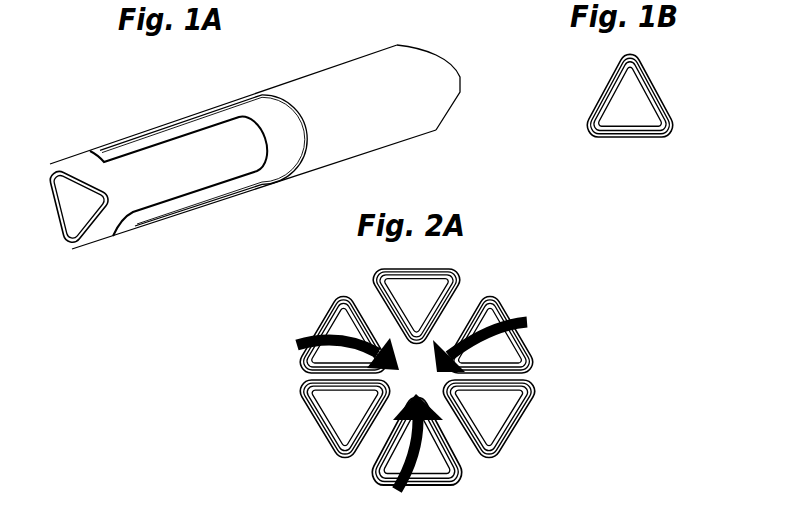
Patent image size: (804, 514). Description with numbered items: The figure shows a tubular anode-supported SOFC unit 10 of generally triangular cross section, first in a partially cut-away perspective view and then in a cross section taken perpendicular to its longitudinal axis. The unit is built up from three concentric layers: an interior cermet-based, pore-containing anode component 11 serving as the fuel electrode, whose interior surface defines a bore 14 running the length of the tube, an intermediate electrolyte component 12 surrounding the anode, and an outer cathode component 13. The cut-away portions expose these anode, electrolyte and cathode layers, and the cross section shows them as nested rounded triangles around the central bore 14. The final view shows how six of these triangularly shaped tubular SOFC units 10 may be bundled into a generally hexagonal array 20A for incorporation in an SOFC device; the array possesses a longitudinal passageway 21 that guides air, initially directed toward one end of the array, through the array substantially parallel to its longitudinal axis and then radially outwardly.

In FIG. 1A, the tubular anode-supported SOFC unit 10 is at (251, 182).
In FIG. 1B, the tubular anode-supported SOFC unit 10 is at (616, 117).
In FIG. 2A, the tubular anode-supported SOFC unit 10 is at (315, 320).
In FIG. 1A, the anode component 11 is at (410, 87).
In FIG. 1A, the electrolyte component 12 is at (285, 137).
In FIG. 1A, the cathode component 13 is at (203, 137).
In FIG. 1A, the bore 14 is at (80, 202).
In FIG. 2A, the hexagonal array 20A is at (459, 373).
In FIG. 2A, the longitudinal passageway 21 is at (388, 390).